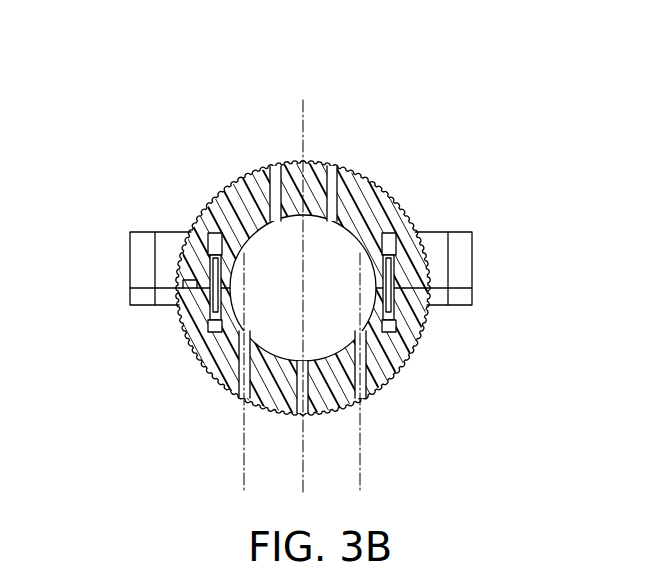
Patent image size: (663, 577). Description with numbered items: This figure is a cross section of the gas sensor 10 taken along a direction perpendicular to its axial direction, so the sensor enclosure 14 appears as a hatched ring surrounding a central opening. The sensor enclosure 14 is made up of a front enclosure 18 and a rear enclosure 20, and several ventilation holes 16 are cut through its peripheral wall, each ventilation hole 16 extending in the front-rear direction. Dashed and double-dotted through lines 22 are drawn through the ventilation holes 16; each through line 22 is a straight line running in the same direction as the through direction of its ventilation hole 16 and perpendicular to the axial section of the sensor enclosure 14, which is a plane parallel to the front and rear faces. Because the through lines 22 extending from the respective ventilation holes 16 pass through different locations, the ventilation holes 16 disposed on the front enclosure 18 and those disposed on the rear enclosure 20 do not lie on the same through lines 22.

The gear assembly 10 is at (236, 115).
The sensor enclosure 14 is at (396, 197).
The ventilation hole 16 is at (332, 165).
The front enclosure 18 is at (406, 366).
The rear enclosure 20 is at (213, 200).
The through line 22 is at (243, 432).